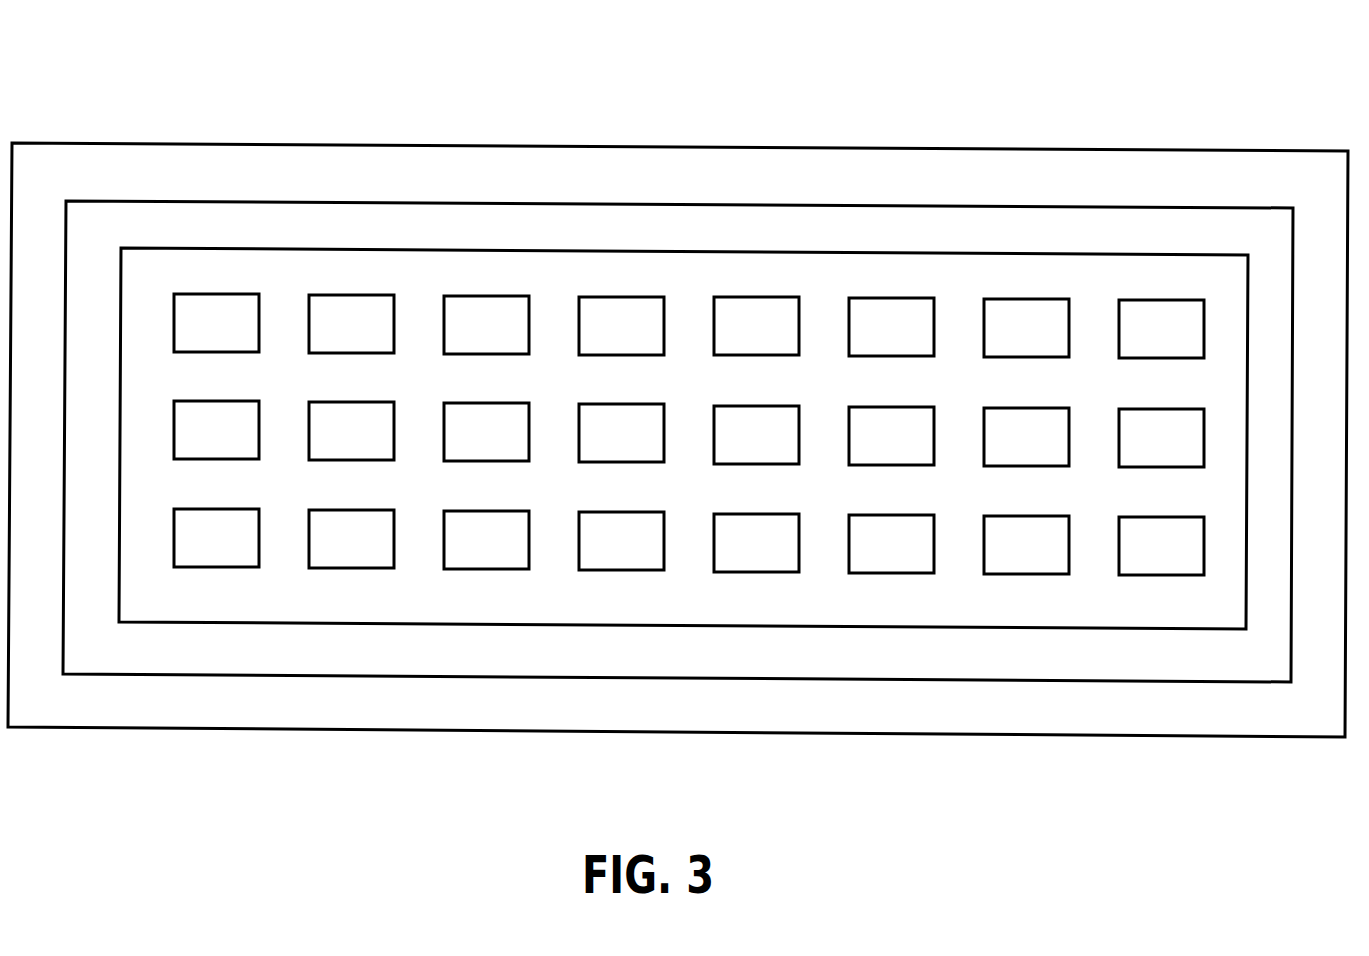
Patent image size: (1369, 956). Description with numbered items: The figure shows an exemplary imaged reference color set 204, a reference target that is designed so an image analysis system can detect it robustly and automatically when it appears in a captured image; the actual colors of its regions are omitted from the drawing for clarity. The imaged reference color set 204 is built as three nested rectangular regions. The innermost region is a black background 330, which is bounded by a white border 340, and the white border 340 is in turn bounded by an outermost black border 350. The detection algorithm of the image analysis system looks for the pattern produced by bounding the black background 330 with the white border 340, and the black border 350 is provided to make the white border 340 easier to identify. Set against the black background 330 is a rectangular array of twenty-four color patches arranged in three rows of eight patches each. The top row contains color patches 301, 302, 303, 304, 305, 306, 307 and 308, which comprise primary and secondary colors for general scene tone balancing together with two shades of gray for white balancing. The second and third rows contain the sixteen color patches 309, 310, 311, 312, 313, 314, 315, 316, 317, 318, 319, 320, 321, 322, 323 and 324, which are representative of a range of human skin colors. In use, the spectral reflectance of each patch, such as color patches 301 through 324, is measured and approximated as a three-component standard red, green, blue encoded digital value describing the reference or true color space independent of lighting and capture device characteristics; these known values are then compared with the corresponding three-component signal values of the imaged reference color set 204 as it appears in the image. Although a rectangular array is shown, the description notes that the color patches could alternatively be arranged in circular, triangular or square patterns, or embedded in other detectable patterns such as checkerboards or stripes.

The imaged reference color set 204 is at (277, 33).
The black border 350 is at (575, 173).
The white border 340 is at (773, 223).
The black background 330 is at (957, 278).
The color patch 301 is at (216, 323).
The color patch 302 is at (351, 324).
The color patch 303 is at (486, 325).
The color patch 304 is at (621, 326).
The color patch 305 is at (756, 326).
The color patch 306 is at (891, 327).
The color patch 307 is at (1026, 328).
The color patch 308 is at (1161, 329).
The color patch 309 is at (216, 430).
The color patch 310 is at (351, 431).
The color patch 311 is at (486, 432).
The color patch 312 is at (621, 433).
The color patch 313 is at (756, 435).
The color patch 314 is at (891, 436).
The color patch 315 is at (1026, 437).
The color patch 316 is at (1161, 438).
The color patch 317 is at (216, 538).
The color patch 318 is at (351, 539).
The color patch 319 is at (486, 540).
The color patch 320 is at (621, 541).
The color patch 321 is at (756, 543).
The color patch 322 is at (891, 544).
The color patch 323 is at (1026, 545).
The color patch 324 is at (1161, 546).